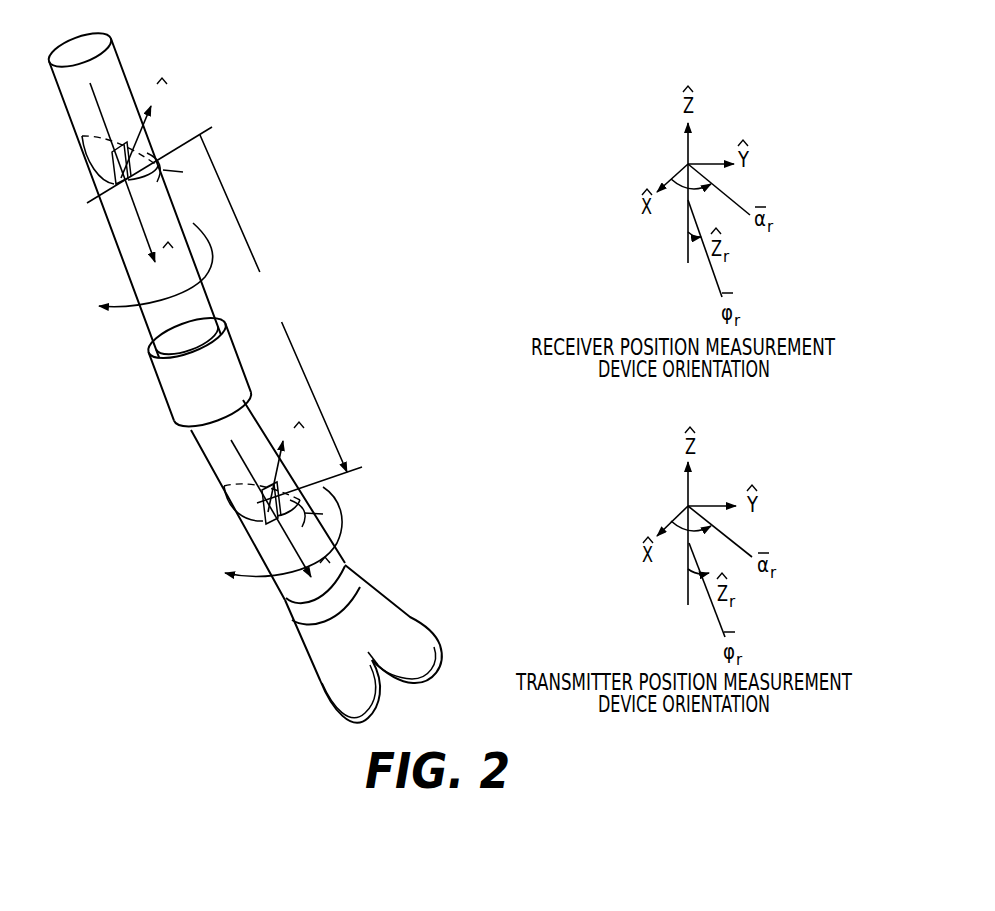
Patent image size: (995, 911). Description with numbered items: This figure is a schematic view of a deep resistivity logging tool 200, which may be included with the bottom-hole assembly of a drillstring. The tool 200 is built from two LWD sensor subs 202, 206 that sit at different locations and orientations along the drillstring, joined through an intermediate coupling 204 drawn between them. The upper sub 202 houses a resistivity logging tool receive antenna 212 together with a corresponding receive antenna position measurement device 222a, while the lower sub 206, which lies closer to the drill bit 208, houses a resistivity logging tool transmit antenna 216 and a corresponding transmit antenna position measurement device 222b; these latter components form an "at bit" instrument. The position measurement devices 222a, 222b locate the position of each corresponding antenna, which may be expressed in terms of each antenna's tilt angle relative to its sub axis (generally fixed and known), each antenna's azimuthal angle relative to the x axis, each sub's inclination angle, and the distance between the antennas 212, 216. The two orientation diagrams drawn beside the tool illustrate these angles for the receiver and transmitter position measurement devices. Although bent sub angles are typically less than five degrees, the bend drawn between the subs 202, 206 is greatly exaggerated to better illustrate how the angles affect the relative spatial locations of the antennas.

The deep resistivity logging tool 200 is at (297, 99).
The LWD sensor sub 202 is at (114, 50).
The coupling collar 204 is at (157, 378).
The LWD sensor sub 206 is at (259, 423).
The drill bit 208 is at (390, 601).
The receive antenna 212 is at (112, 175).
The transmit antenna 216 is at (258, 521).
The receive antenna position measurement device 222a is at (87, 203).
The transmit antenna position measurement device 222b is at (258, 508).